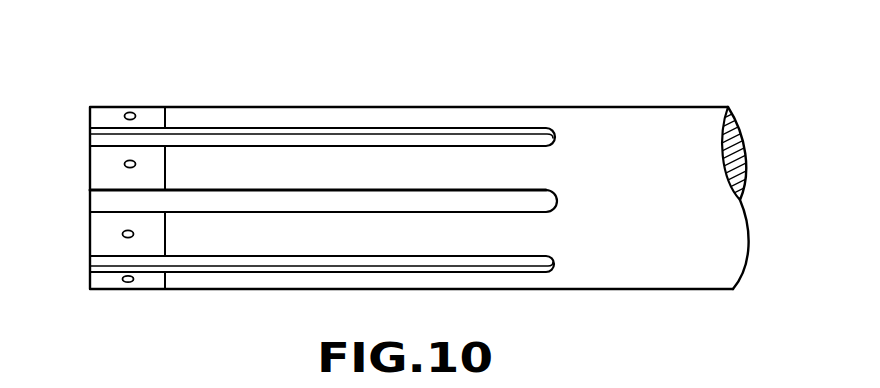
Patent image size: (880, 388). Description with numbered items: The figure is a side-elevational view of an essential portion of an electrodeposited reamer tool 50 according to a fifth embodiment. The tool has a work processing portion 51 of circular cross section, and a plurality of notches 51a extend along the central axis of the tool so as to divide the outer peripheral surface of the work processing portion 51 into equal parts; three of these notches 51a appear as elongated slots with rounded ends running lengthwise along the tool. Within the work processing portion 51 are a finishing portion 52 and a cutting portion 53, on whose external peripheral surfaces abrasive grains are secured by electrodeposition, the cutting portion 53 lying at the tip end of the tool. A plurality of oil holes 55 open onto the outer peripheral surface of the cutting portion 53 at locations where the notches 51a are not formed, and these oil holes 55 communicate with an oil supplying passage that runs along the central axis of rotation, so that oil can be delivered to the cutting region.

The electrodeposited reamer tool 50 is at (622, 92).
The work processing portion 51 is at (568, 76).
The notches 51a is at (337, 258).
The finishing portion 52 is at (309, 278).
The cutting portion 53 is at (146, 280).
The oil holes 55 is at (125, 117).